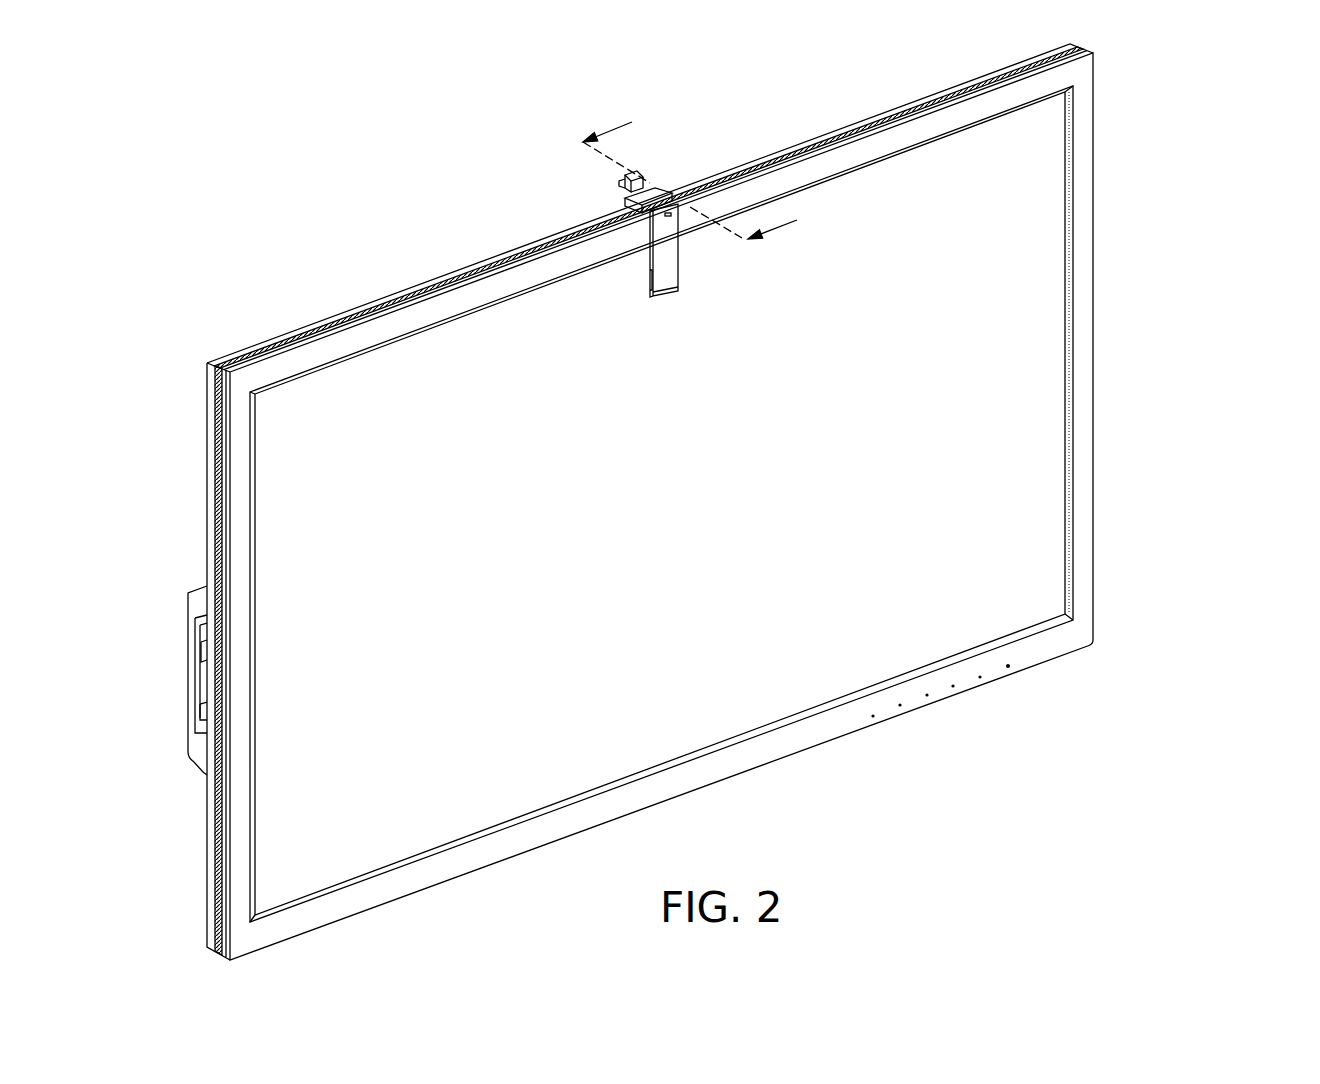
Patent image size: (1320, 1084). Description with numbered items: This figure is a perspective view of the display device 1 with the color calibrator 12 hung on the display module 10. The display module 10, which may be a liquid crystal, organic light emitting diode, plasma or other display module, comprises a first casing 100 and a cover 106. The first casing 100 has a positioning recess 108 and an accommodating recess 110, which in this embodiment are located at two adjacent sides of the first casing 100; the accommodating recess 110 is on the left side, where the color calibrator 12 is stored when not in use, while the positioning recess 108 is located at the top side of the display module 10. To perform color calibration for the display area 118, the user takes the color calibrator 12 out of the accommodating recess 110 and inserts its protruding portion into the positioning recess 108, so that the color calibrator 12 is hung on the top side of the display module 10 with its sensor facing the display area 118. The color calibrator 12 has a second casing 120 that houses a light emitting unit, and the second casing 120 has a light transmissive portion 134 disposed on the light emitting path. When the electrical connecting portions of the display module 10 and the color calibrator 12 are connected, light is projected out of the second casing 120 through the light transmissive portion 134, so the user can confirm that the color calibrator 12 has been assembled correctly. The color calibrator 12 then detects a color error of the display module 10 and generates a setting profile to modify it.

The display device 1 is at (704, 502).
The display module 10 is at (639, 502).
The first casing 100 is at (686, 502).
The cover 106 is at (641, 170).
The positioning recess 108 is at (618, 213).
The accommodating recess 110 is at (202, 617).
The display area 118 is at (1043, 237).
The color calibrator 12 is at (715, 247).
The second casing 120 is at (667, 293).
The light transmissive portion 134 is at (671, 222).